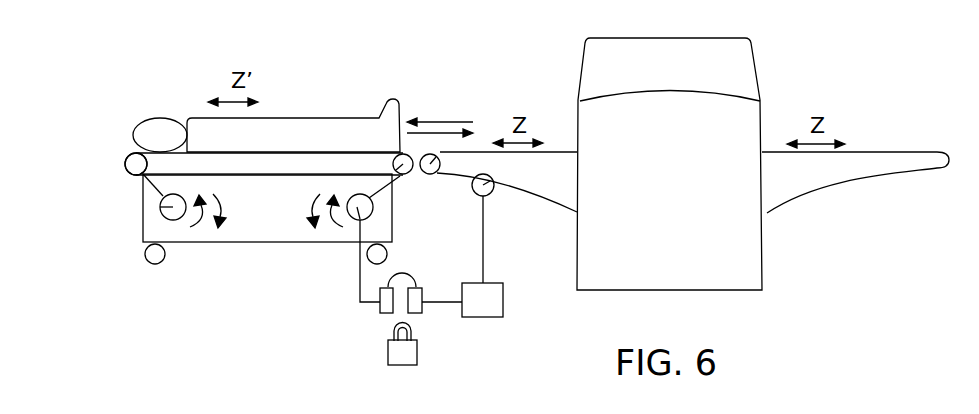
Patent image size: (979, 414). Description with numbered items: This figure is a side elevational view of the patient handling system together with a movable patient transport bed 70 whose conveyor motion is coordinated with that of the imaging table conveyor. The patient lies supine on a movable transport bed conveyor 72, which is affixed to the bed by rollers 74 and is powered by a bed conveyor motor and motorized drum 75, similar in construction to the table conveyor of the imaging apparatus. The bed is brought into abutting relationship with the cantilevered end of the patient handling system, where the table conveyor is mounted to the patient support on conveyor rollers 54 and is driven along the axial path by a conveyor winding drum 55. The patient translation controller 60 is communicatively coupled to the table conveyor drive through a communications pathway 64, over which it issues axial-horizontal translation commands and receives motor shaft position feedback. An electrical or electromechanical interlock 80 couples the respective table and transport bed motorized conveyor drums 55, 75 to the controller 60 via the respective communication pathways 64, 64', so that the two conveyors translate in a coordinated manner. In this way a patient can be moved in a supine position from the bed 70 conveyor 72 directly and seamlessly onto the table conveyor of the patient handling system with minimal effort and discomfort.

The conveyor rollers 54 is at (437, 158).
The conveyor winding drum 55 is at (488, 196).
The patient translation controller 60 is at (482, 300).
The communications pathway 64 is at (451, 239).
The communication pathway 64' is at (405, 291).
The movable patient transport bed 70 is at (93, 244).
The transport bed conveyor 72 is at (145, 153).
The rollers 74 is at (128, 162).
The bed conveyor motorized drum 75 is at (165, 207).
The interlock 80 is at (434, 329).